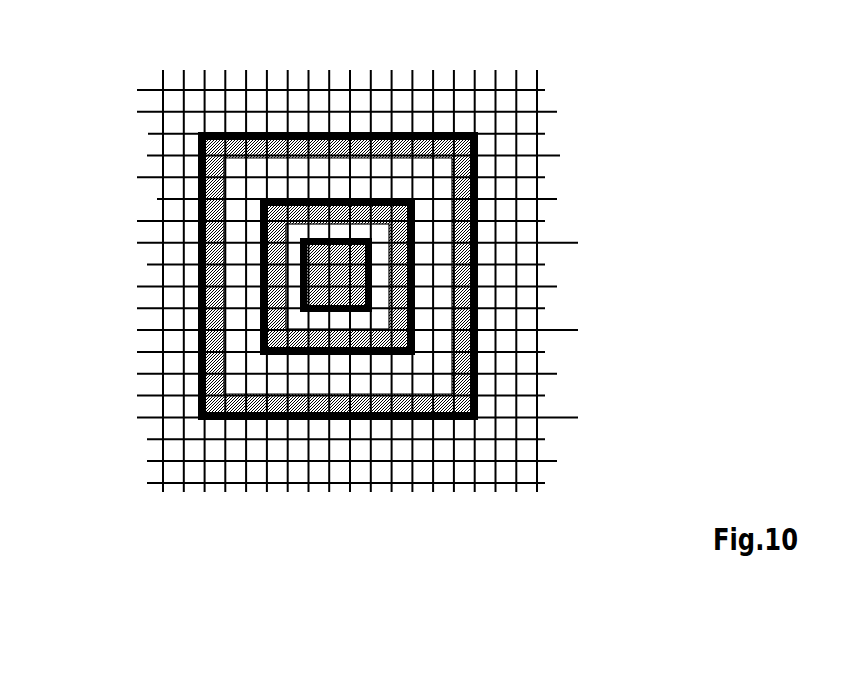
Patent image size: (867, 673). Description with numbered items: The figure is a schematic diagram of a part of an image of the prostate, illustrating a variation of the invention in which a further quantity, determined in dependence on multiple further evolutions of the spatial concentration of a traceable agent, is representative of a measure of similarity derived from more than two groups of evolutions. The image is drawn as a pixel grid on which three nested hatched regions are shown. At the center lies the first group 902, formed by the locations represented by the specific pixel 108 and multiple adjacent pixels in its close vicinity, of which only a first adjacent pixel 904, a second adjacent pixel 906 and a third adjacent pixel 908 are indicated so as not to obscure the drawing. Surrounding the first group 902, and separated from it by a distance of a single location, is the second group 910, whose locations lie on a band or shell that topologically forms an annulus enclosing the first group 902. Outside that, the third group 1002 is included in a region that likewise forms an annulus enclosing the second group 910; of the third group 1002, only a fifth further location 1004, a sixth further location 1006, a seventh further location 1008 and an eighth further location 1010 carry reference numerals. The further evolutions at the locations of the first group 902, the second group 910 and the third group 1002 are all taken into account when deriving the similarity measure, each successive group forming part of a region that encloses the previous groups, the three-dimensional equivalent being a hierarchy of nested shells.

The specific pixel 108 is at (337, 272).
The first group 902 is at (305, 303).
The first adjacent pixel 904 is at (358, 252).
The second adjacent pixel 906 is at (305, 253).
The third adjacent pixel 908 is at (317, 300).
The second group 910 is at (293, 352).
The third group 1002 is at (473, 287).
The fifth further location 1004 is at (462, 340).
The sixth further location 1006 is at (300, 147).
The seventh further location 1008 is at (218, 277).
The eighth further location 1010 is at (275, 405).